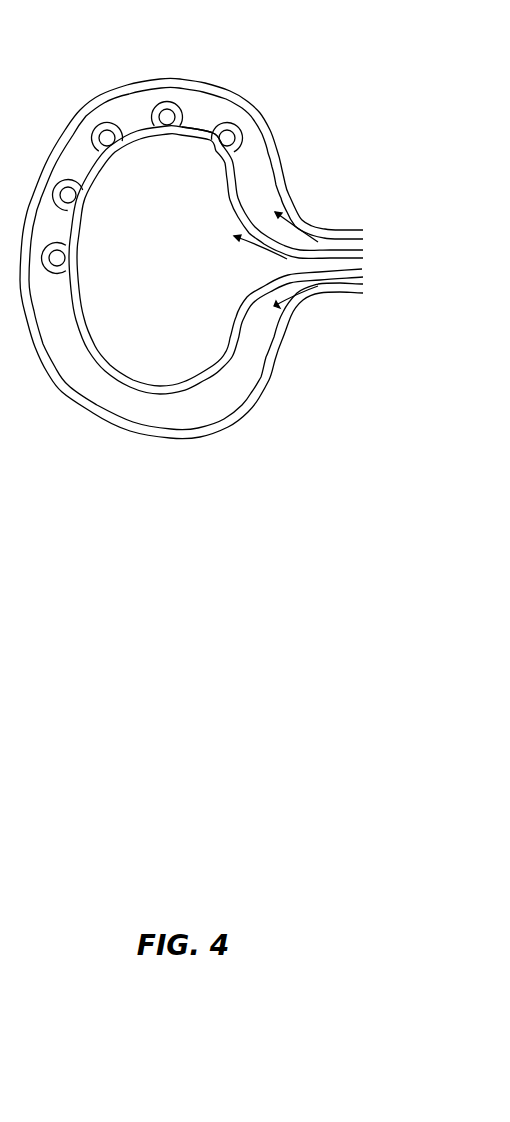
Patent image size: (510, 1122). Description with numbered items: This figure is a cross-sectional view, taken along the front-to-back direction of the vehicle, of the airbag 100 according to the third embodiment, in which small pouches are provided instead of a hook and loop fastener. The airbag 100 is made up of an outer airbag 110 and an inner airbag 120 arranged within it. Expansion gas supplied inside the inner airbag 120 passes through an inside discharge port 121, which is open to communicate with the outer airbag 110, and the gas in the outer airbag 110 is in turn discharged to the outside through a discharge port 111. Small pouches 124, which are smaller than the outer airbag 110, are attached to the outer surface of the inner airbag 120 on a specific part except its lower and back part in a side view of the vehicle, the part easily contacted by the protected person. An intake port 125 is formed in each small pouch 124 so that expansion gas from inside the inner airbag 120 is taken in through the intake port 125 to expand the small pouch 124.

The airbag 100 is at (287, 56).
The outer airbag 110 is at (288, 153).
The discharge port 111 is at (198, 429).
The inner airbag 120 is at (188, 128).
The inside discharge port 121 is at (213, 374).
The small pouches 124 is at (239, 125).
The intake port 125 is at (204, 147).